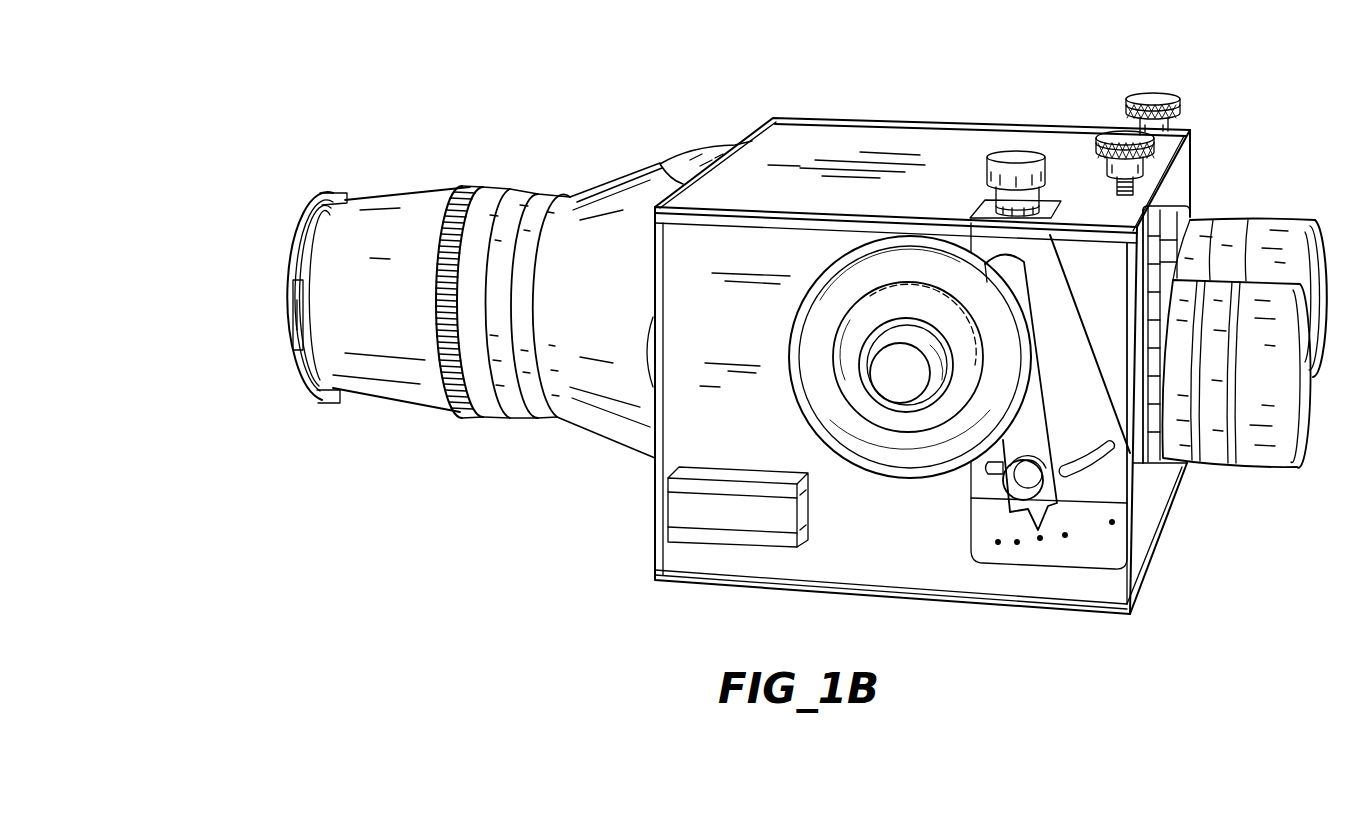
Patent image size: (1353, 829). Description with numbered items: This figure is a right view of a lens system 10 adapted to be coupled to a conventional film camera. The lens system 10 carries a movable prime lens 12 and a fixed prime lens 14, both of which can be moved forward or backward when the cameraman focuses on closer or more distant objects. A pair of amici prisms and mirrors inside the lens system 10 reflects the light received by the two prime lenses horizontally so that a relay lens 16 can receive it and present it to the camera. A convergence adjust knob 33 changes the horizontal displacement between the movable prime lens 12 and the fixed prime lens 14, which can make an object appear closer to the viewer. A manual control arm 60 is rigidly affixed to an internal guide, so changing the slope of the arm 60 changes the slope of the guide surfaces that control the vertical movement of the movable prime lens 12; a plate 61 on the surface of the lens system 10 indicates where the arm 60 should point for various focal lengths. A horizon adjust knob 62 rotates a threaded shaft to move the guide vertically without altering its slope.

The lens system 10 is at (770, 118).
The movable prime lens 12 is at (1213, 437).
The fixed prime lens 14 is at (1237, 234).
The relay lens 16 is at (478, 422).
The convergence adjust knob 33 is at (860, 393).
The manual control arm 60 is at (1027, 423).
The plate 61 is at (985, 515).
The horizon adjust knob 62 is at (1013, 150).